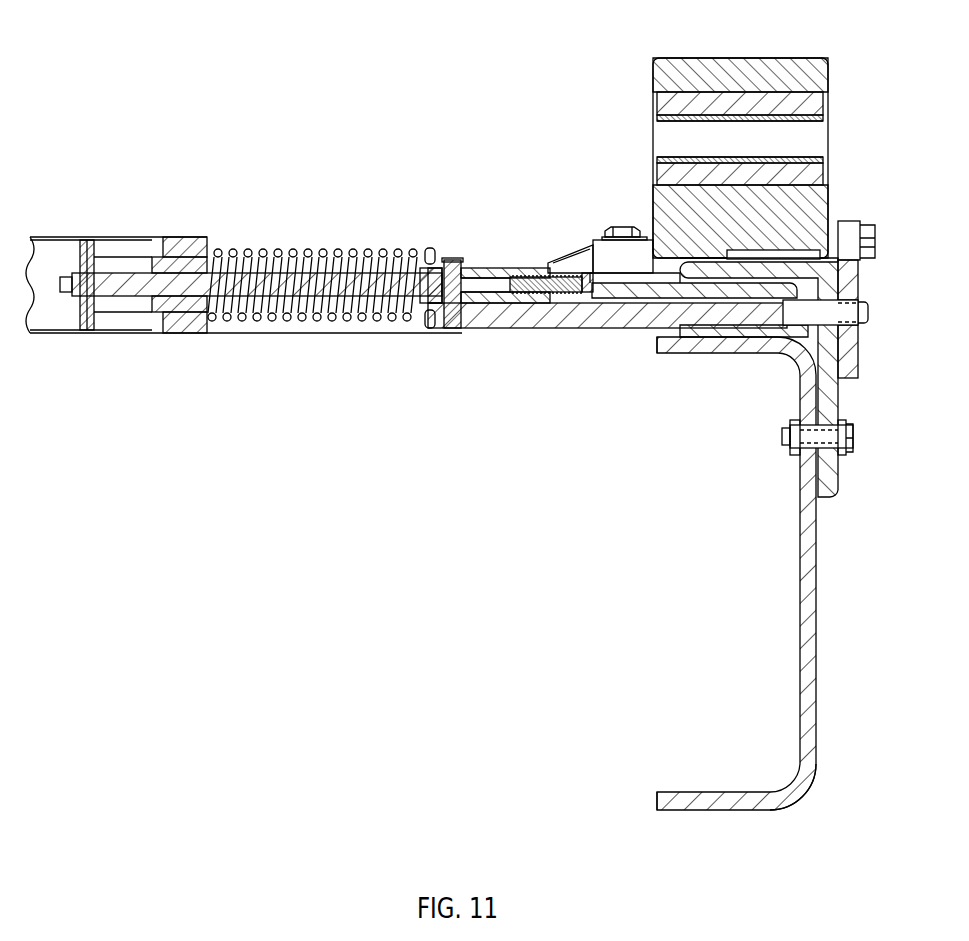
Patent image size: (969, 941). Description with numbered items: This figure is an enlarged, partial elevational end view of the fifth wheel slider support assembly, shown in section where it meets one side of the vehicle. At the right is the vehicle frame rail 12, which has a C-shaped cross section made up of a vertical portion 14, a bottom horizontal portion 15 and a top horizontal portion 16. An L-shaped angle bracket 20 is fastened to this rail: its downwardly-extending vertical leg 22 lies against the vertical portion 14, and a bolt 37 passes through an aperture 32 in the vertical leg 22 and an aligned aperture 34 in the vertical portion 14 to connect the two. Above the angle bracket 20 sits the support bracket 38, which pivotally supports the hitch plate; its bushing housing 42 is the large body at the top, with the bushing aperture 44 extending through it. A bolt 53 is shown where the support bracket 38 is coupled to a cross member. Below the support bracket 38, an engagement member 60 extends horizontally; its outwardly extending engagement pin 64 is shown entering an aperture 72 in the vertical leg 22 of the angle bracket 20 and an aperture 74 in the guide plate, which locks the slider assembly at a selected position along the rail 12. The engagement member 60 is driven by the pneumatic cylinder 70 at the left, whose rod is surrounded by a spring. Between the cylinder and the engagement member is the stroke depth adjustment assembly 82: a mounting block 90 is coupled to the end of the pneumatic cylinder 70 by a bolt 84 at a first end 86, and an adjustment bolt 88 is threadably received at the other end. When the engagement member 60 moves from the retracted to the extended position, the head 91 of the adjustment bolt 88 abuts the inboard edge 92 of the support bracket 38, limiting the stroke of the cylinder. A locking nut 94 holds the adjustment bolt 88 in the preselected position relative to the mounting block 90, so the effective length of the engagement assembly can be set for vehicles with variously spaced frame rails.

The vehicle frame rail 12 is at (817, 760).
The vertical portion 14 is at (754, 573).
The bottom horizontal portion 15 is at (700, 792).
The top horizontal portion 16 is at (692, 353).
The angle bracket 20 is at (850, 238).
The vertical leg 22 is at (838, 408).
The aperture 32 is at (802, 415).
The aperture 34 is at (800, 455).
The bolt 37 is at (850, 455).
The support bracket 38 is at (790, 75).
The bushing housing 42 is at (738, 100).
The bushing aperture 44 is at (676, 135).
The bolt 53 is at (618, 227).
The engagement member 60 is at (722, 316).
The engagement pin 64 is at (866, 312).
The pneumatic cylinder 70 is at (130, 235).
The aperture 72 is at (852, 382).
The aperture 74 is at (852, 343).
The stroke depth adjustment assembly 82 is at (540, 250).
The bolt 84 is at (450, 258).
The first end 86 is at (425, 252).
The adjustment bolt 88 is at (562, 292).
The mounting block 90 is at (492, 268).
The head 91 is at (590, 262).
The inboard edge 92 is at (580, 290).
The locking nut 94 is at (530, 295).